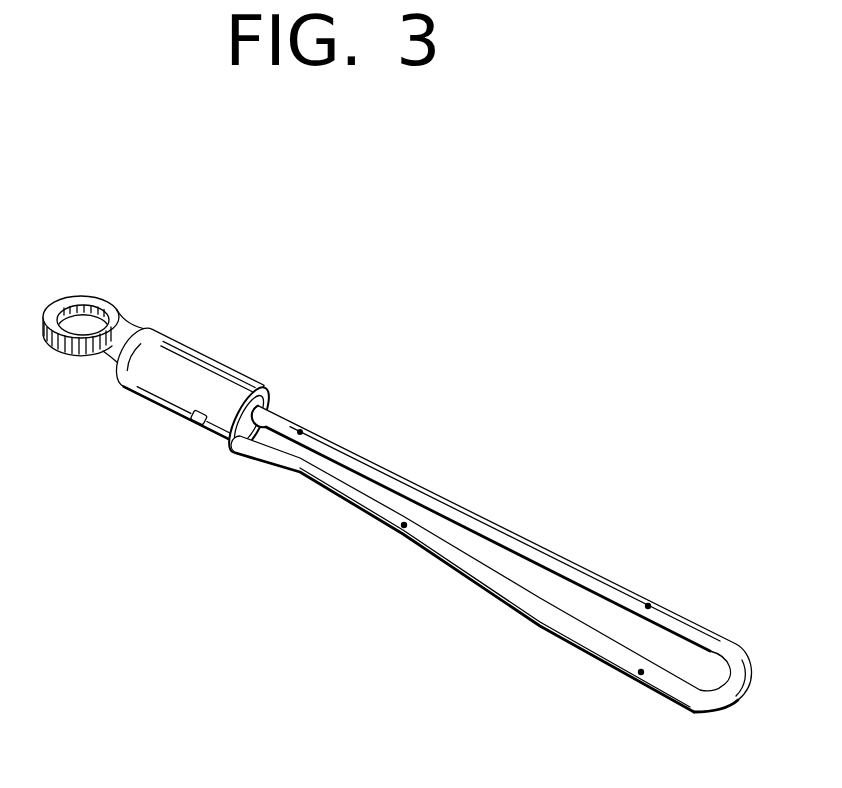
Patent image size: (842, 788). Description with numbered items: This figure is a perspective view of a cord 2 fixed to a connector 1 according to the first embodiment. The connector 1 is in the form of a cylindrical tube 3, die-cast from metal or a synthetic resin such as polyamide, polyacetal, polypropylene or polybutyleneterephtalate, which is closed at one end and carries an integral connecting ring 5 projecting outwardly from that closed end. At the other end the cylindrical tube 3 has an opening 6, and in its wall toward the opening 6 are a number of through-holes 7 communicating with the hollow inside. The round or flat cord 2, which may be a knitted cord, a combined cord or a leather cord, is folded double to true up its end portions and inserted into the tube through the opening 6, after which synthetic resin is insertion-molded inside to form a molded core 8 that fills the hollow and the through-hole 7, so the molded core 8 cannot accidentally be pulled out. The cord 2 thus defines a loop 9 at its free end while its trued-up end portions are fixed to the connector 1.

The connector 1 is at (386, 483).
The cord 2 is at (491, 546).
The cylindrical tube 3 is at (127, 382).
The connecting ring 5 is at (82, 297).
The opening 6 is at (242, 447).
The through-hole 7 is at (187, 427).
The molded core 8 is at (265, 393).
The loop 9 is at (720, 694).